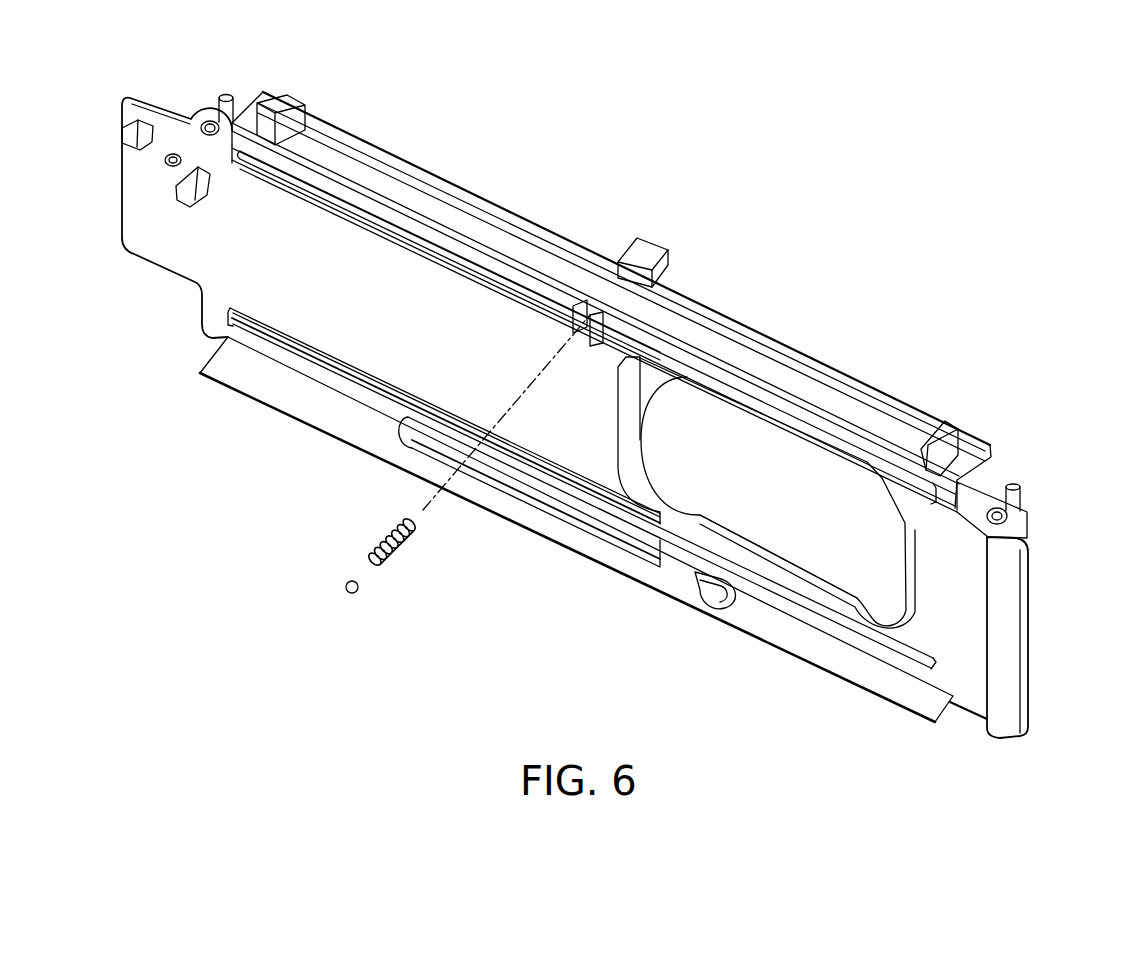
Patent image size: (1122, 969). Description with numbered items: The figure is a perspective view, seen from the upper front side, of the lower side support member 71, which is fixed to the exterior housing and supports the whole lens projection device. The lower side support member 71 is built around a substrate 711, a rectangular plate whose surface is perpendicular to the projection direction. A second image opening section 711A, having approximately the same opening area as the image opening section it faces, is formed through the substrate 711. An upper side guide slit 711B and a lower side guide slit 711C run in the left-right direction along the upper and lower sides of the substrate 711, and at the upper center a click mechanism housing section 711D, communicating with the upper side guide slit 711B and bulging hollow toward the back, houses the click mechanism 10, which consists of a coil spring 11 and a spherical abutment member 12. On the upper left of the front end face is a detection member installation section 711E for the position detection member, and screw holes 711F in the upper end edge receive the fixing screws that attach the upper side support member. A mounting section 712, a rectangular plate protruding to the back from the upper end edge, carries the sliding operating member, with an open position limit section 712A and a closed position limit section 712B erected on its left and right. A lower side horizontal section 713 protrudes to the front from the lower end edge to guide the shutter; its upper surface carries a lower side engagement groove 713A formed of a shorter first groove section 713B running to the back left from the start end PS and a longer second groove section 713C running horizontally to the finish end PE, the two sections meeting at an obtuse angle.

The lower side support member 71 is at (875, 258).
The substrate 711 is at (963, 530).
The second image opening section 711A is at (668, 380).
The upper side guide slit 711B is at (290, 188).
The lower side guide slit 711C is at (265, 317).
The click mechanism housing section 711D is at (645, 250).
The detection member installation section 711E is at (178, 202).
The screw hole 711F is at (215, 117).
The mounting section 712 is at (707, 333).
The open position limit section 712A is at (307, 112).
The closed position limit section 712B is at (953, 425).
The lower side horizontal section 713 is at (818, 652).
The lower side engagement groove 713A is at (660, 662).
The first groove section 713B is at (703, 585).
The second groove section 713C is at (615, 520).
The finish end PE is at (422, 415).
The start end PS is at (723, 587).
The click mechanism 10 is at (405, 580).
The coil spring 11 is at (418, 543).
The spherical abutment member 12 is at (377, 609).